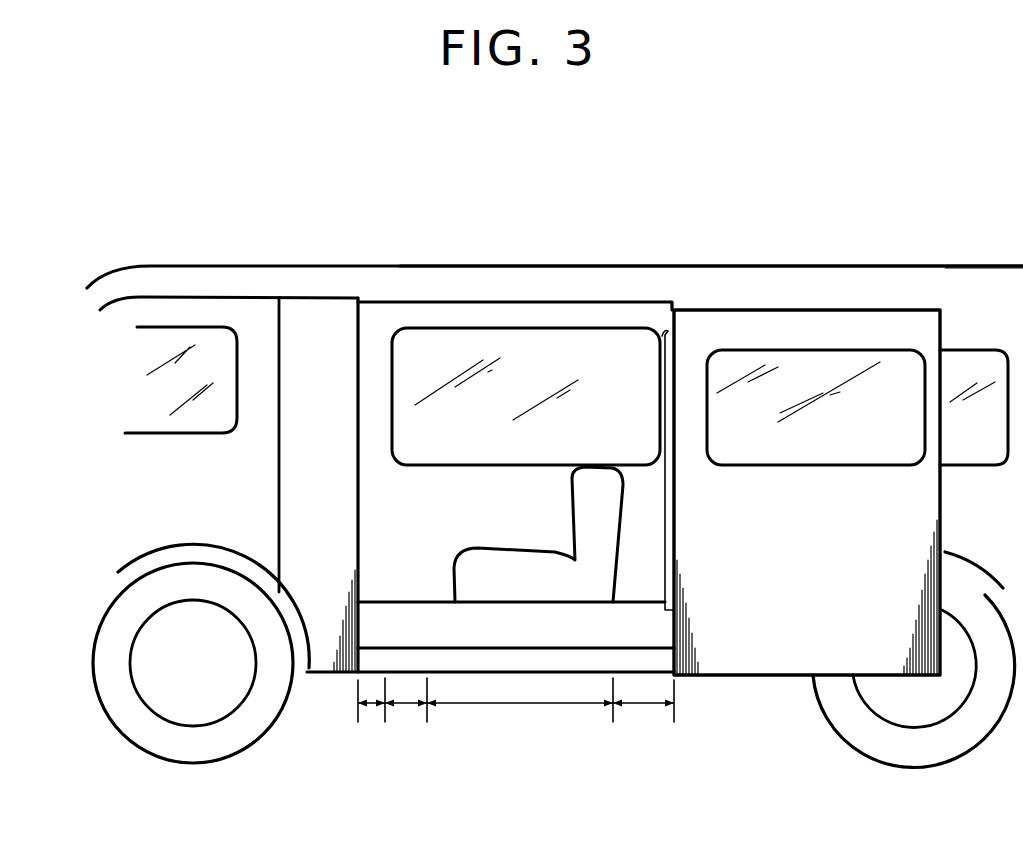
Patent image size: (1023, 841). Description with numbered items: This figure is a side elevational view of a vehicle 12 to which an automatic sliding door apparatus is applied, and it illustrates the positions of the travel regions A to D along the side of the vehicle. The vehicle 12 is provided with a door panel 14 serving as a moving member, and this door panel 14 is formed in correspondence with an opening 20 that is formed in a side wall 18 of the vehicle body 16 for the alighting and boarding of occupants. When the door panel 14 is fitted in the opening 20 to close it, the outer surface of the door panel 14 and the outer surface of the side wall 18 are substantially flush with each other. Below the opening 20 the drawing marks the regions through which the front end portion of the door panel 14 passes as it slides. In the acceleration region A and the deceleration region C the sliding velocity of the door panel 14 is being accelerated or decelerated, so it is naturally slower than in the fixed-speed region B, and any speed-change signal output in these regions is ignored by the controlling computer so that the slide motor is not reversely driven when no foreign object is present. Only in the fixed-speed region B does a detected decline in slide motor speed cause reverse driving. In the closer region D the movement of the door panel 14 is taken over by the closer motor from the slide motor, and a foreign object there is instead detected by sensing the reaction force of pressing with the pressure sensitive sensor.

The vehicle 12 is at (864, 238).
The door panel 14 is at (742, 637).
The vehicle body 16 is at (786, 266).
The side wall 18 is at (983, 294).
The opening 20 is at (474, 310).
The acceleration region A is at (637, 704).
The fixed-speed region B is at (522, 704).
The deceleration region C is at (405, 704).
The closer region D is at (372, 704).